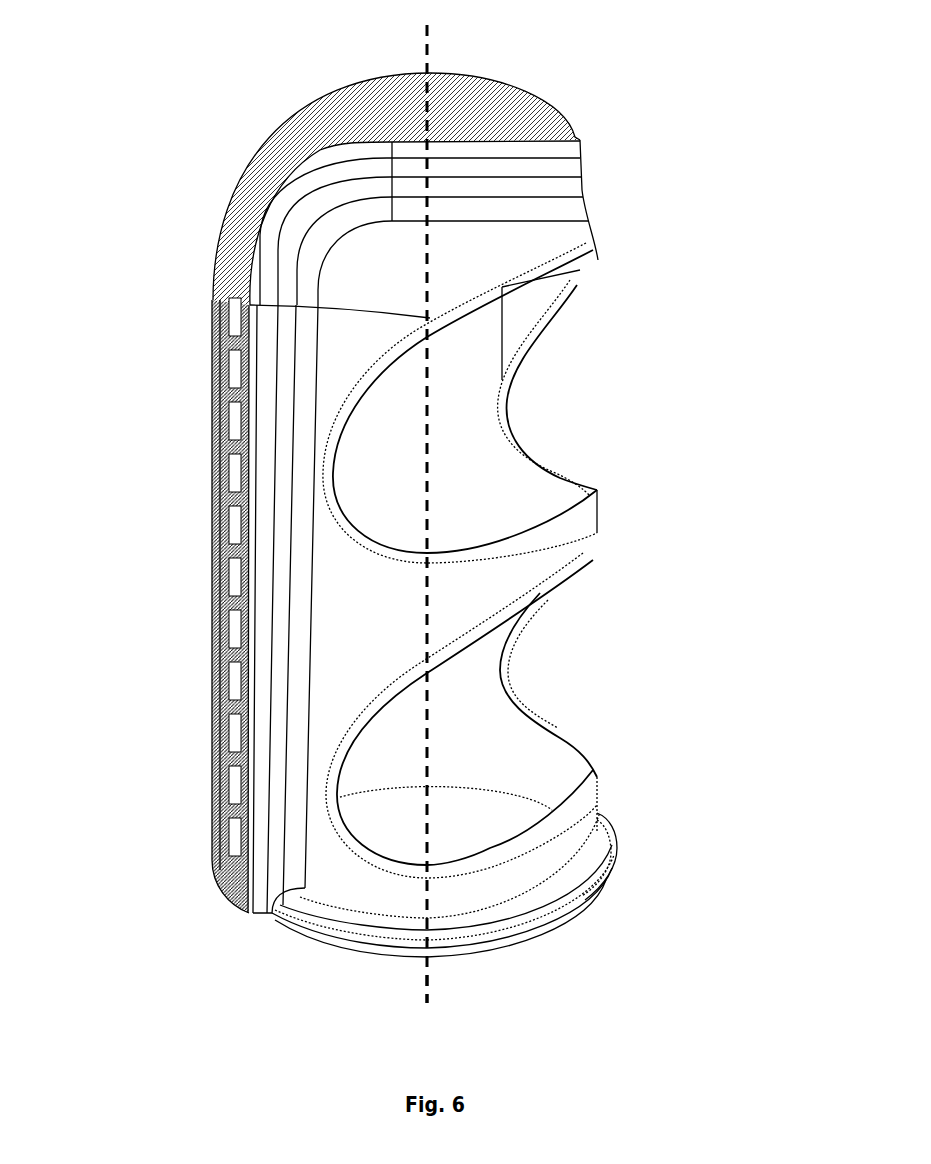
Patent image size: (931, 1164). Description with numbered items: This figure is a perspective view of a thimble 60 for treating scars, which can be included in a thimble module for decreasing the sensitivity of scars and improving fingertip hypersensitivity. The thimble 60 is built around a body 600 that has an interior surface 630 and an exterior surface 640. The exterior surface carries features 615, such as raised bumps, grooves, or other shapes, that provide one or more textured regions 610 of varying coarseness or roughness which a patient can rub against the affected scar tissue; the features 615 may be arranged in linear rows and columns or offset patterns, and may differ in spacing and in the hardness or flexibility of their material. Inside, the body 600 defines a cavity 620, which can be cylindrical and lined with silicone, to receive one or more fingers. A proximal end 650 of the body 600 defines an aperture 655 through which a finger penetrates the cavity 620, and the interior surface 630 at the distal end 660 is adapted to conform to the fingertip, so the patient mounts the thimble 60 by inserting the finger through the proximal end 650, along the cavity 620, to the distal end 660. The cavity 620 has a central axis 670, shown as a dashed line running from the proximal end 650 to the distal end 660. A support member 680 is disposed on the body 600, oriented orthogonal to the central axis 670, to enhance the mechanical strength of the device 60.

The thimble 60 is at (221, 68).
The body 600 is at (170, 290).
The textured region 610 is at (214, 162).
The features 615 is at (206, 206).
The cavity 620 is at (558, 376).
The interior surface 630 is at (558, 426).
The exterior surface 640 is at (170, 440).
The proximal end 650 is at (377, 996).
The aperture 655 is at (463, 1000).
The distal end 660 is at (386, 50).
The central axis 670 is at (462, 43).
The support member 680 is at (634, 515).